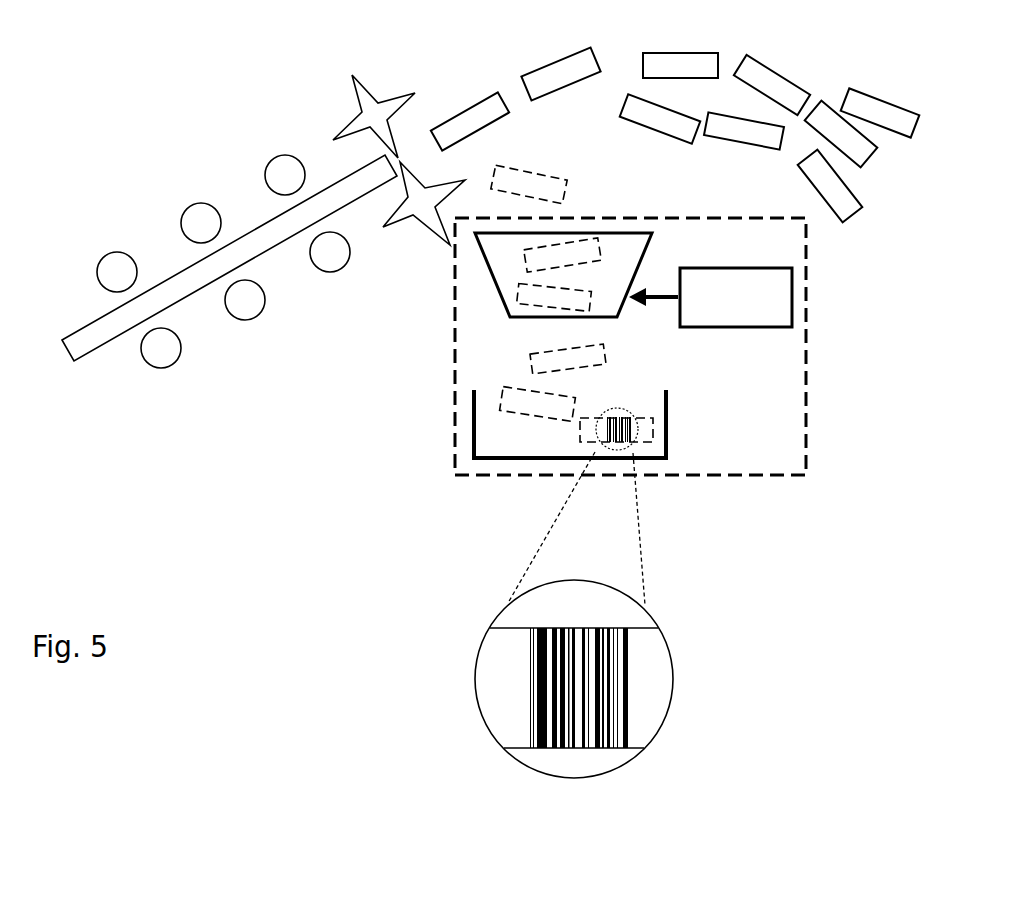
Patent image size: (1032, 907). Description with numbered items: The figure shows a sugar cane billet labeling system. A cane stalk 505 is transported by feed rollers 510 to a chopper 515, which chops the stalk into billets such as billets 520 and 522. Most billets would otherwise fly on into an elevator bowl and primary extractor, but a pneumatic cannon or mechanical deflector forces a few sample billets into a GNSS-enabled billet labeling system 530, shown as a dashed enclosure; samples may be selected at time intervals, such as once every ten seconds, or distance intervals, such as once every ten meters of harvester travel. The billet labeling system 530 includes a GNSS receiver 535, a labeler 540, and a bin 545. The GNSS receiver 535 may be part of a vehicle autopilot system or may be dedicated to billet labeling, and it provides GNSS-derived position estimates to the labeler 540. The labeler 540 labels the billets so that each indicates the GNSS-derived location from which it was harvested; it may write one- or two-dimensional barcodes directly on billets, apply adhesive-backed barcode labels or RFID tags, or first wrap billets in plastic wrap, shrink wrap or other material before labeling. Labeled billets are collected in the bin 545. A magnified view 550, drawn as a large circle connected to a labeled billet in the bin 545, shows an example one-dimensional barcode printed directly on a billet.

The cane stalk 505 is at (77, 330).
The feed rollers 510 is at (264, 168).
The chopper 515 is at (365, 86).
The billet 520 is at (548, 60).
The billet 522 is at (770, 63).
The GNSS-enabled billet labeling system 530 is at (807, 393).
The GNSS receiver 535 is at (702, 328).
The labeler 540 is at (643, 256).
The bin 545 is at (668, 432).
The magnified view 550 is at (668, 642).